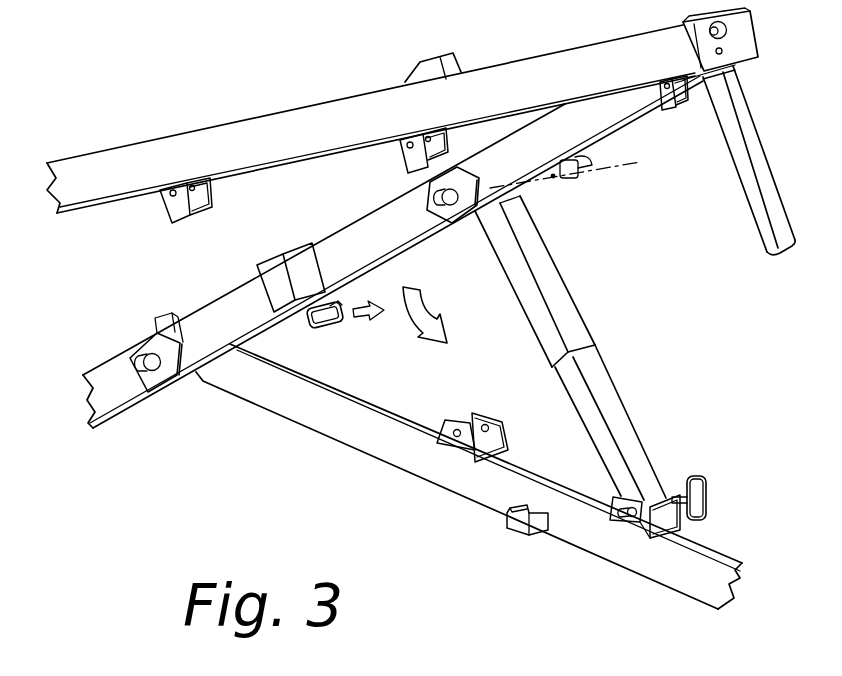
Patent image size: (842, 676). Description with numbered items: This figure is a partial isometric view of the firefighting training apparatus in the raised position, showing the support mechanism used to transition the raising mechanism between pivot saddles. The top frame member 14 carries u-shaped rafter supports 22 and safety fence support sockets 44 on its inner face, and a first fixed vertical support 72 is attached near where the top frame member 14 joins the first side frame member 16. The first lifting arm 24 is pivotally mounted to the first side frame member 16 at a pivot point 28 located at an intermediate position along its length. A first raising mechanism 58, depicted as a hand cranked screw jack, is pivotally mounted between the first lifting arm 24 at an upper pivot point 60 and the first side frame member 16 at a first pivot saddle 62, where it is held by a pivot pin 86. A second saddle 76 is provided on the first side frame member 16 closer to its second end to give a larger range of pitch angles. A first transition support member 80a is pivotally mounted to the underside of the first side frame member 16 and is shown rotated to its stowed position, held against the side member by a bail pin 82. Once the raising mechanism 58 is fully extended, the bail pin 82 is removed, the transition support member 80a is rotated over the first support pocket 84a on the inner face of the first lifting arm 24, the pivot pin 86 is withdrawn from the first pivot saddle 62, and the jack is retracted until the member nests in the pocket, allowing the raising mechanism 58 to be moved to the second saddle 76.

The top frame member 14 is at (285, 132).
The first side frame member 16 is at (348, 252).
The rafter supports 22 is at (400, 155).
The first lifting arm 24 is at (333, 418).
The pivot point 28 is at (147, 355).
The safety fence support sockets 44 is at (278, 290).
The first raising mechanism 58 is at (555, 303).
The upper pivot point 60 is at (436, 198).
The first pivot saddle 62 is at (637, 521).
The first fixed vertical support 72 is at (746, 190).
The second saddle 76 is at (488, 412).
The first transition support member 80a is at (448, 238).
The bail pin 82 is at (330, 328).
The first support pocket 84a is at (518, 537).
The pivot pin 86 is at (694, 476).